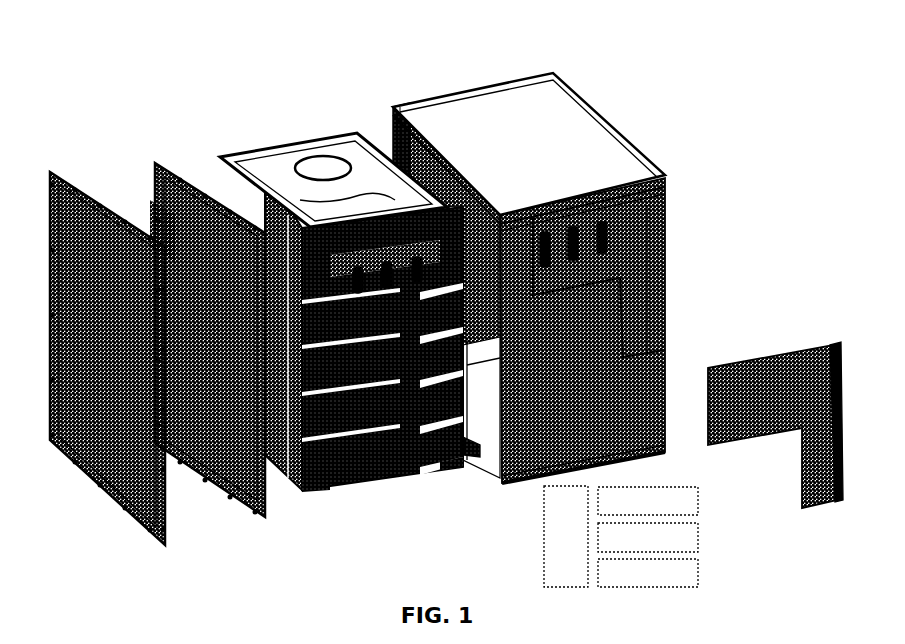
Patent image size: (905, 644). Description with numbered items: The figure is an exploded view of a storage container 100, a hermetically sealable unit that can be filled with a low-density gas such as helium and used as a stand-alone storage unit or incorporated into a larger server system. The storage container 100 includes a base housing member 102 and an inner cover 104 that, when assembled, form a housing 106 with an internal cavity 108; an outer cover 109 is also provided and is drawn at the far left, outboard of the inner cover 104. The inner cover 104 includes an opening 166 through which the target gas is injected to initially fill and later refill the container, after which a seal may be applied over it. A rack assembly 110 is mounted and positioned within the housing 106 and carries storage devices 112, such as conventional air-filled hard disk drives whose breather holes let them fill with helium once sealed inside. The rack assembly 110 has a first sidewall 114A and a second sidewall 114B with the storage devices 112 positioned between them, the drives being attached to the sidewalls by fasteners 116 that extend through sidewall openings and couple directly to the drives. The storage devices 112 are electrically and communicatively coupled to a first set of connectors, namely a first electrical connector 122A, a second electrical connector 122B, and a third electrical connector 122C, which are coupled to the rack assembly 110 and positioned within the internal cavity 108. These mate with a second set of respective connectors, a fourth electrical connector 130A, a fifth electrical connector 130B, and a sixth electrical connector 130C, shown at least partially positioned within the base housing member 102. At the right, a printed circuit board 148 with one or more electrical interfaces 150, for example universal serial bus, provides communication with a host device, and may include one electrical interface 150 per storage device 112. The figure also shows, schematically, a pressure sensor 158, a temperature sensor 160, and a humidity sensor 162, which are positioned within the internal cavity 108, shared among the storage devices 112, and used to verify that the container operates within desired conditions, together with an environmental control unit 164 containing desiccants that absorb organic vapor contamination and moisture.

The storage container 100 is at (654, 56).
The base housing member 102 is at (405, 107).
The inner cover 104 is at (160, 172).
The housing 106 is at (142, 127).
The internal cavity 108 is at (493, 477).
The outer cover 109 is at (62, 178).
The rack assembly 110 is at (242, 107).
The storage devices 112 is at (315, 155).
The first sidewall 114A is at (313, 490).
The second sidewall 114B is at (457, 470).
The fasteners 116 is at (293, 470).
The first electrical connector 122A is at (362, 292).
The second electrical connector 122B is at (388, 288).
The third electrical connector 122C is at (417, 283).
The fourth electrical connector 130A is at (547, 232).
The fifth electrical connector 130B is at (577, 228).
The sixth electrical connector 130C is at (610, 237).
The printed circuit board 148 is at (738, 372).
The electrical interface 150 is at (845, 352).
The pressure sensor 158 is at (700, 503).
The temperature sensor 160 is at (700, 540).
The humidity sensor 162 is at (700, 577).
The environmental control unit 164 is at (552, 561).
The opening 166 is at (182, 260).